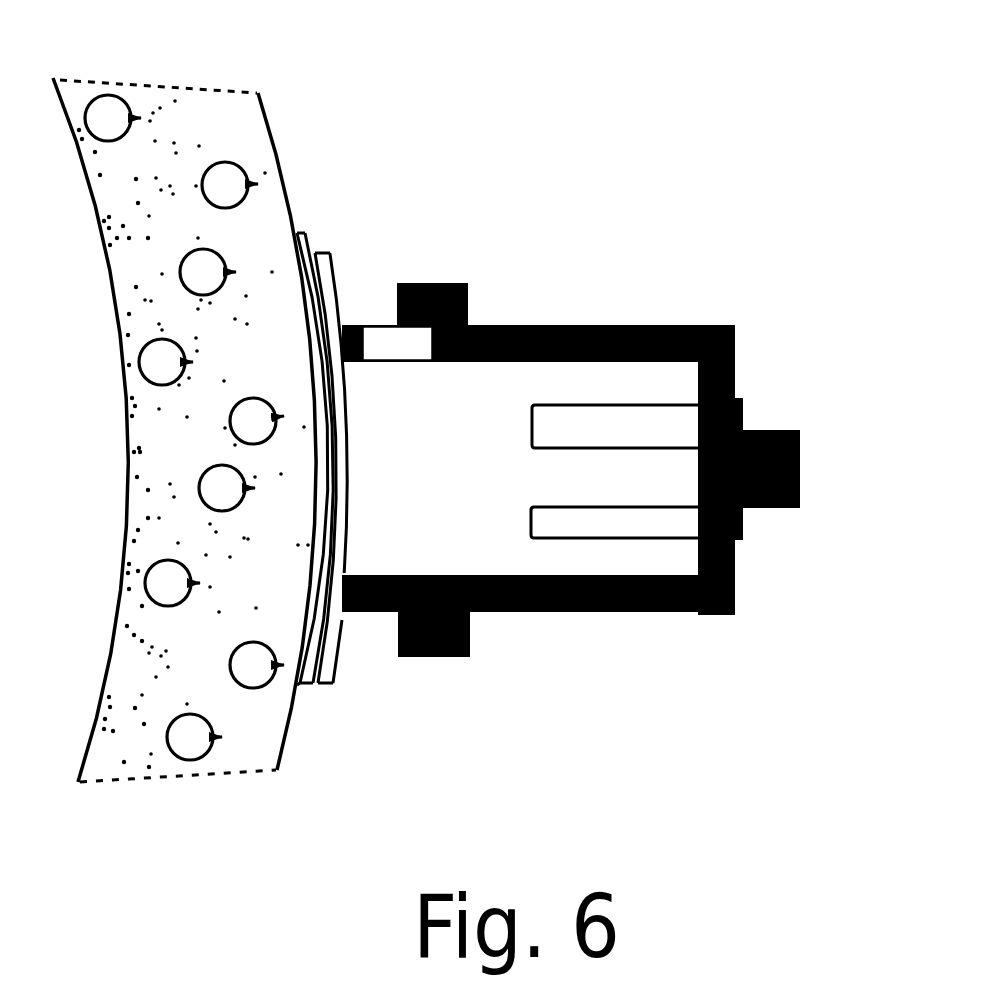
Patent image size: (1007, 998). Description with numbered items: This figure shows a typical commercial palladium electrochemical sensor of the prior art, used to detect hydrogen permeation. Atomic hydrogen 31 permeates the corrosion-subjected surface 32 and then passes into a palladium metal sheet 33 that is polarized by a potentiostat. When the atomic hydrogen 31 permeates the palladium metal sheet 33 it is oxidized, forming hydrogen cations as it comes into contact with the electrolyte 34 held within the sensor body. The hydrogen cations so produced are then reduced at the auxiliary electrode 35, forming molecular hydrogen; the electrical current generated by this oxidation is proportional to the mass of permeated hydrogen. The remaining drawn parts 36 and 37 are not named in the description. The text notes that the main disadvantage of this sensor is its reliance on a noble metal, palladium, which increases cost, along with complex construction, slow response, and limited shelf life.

The atomic hydrogen 31 is at (289, 184).
The corrosion-subjected surface 32 is at (311, 232).
The palladium metal sheet 33 is at (339, 292).
The electrolyte 34 is at (618, 327).
The auxiliary electrode 35 is at (671, 426).
The lower slot 36 is at (673, 523).
The housing bottom wall / chamber 37 is at (458, 551).